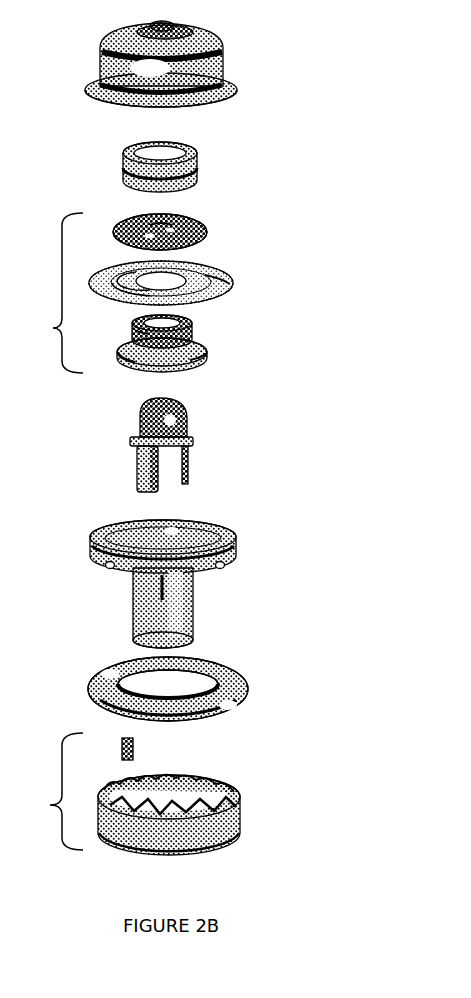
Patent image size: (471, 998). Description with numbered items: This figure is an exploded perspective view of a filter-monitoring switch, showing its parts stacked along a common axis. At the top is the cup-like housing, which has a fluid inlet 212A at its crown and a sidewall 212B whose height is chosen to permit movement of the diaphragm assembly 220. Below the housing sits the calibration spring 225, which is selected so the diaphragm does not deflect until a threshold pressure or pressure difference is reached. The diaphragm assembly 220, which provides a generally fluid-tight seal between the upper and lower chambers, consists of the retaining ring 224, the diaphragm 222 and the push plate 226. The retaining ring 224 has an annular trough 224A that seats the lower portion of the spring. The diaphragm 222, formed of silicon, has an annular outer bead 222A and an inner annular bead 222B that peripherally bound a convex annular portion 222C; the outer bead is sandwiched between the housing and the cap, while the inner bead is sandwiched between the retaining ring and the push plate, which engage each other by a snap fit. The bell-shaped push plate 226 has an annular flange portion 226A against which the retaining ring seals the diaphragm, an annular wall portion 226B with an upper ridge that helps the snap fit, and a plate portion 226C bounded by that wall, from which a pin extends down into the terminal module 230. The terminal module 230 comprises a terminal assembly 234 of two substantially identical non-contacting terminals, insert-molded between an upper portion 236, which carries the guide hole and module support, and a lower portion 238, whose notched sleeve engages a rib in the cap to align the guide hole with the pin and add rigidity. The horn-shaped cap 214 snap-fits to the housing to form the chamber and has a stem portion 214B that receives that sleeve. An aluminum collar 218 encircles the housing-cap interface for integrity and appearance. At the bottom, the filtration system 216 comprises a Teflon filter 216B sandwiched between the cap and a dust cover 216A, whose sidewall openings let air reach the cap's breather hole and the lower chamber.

The fluid inlet 212A is at (156, 24).
The sidewall 212B is at (103, 56).
The calibration spring 225 is at (200, 162).
The diaphragm assembly 220 is at (167, 285).
The retaining ring 224 is at (213, 228).
The annular trough 224A is at (140, 216).
The diaphragm 222 is at (218, 266).
The annular outer bead 222A is at (233, 278).
The inner annular bead 222B is at (145, 277).
The convex annular portion 222C is at (150, 281).
The push plate 226 is at (203, 333).
The annular flange portion 226A is at (207, 352).
The annular wall portion 226B is at (130, 348).
The plate portion 226C is at (147, 329).
The terminal module 230 is at (122, 452).
The upper portion 236 is at (181, 402).
The terminal assembly 234 is at (174, 422).
The lower portion 238 is at (189, 463).
The cap 214 is at (97, 559).
The stem portion 214B is at (197, 610).
The collar 218 is at (90, 677).
The filtration system 216 is at (127, 807).
The dust cover 216A is at (152, 853).
The filter 216B is at (133, 750).